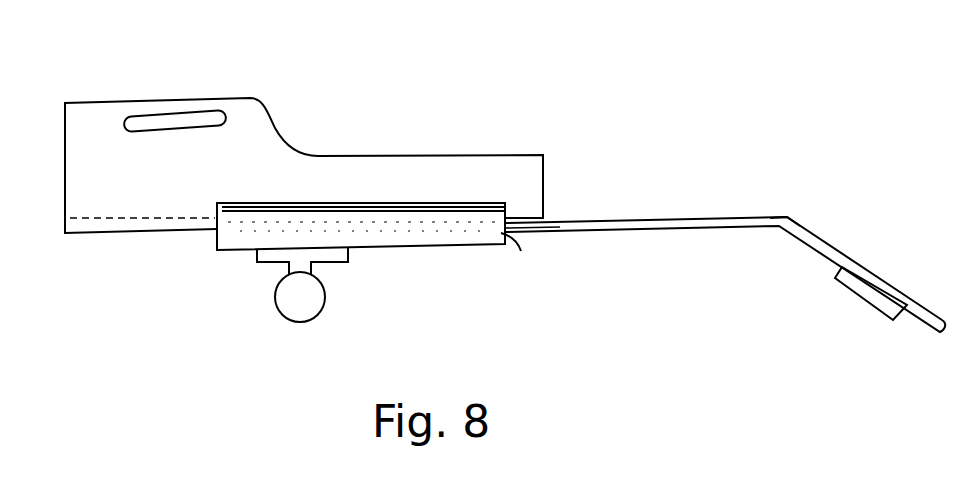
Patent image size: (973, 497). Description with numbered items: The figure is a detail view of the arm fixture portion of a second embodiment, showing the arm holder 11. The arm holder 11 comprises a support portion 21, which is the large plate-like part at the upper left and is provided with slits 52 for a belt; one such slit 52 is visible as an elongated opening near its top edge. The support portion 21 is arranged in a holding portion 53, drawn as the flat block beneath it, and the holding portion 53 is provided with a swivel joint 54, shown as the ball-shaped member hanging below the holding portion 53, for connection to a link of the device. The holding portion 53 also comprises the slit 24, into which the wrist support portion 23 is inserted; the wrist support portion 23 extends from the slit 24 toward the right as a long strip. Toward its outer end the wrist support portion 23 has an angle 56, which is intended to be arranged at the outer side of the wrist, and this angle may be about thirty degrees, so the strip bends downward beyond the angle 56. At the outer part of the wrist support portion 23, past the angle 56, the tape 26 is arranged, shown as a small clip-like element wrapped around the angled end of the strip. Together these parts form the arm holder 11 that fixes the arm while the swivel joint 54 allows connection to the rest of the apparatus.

The arm holder 11 is at (505, 210).
The support portion 21 is at (80, 260).
The wrist support portion 23 is at (665, 221).
The slit 24 is at (521, 270).
The tape 26 is at (860, 296).
The slits 52 is at (173, 112).
The holding portion 53 is at (392, 287).
The swivel joint 54 is at (275, 357).
The angle 56 is at (758, 257).